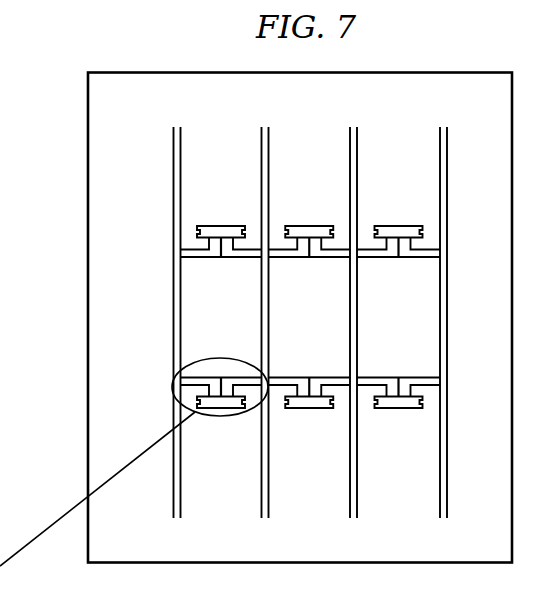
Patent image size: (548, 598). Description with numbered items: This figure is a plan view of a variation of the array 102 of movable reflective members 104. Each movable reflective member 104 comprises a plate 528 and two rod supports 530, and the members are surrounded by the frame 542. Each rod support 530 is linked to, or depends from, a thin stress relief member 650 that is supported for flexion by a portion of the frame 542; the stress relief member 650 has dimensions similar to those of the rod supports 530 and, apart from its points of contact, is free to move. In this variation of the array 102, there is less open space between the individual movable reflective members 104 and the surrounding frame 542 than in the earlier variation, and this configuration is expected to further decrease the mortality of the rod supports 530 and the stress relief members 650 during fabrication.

The array 102 is at (85, 117).
The movable reflective member 104 is at (161, 305).
The frame 542 is at (207, 178).
The plate 528 is at (292, 306).
The rod support 530 is at (311, 376).
The stress relief member 650 is at (305, 409).